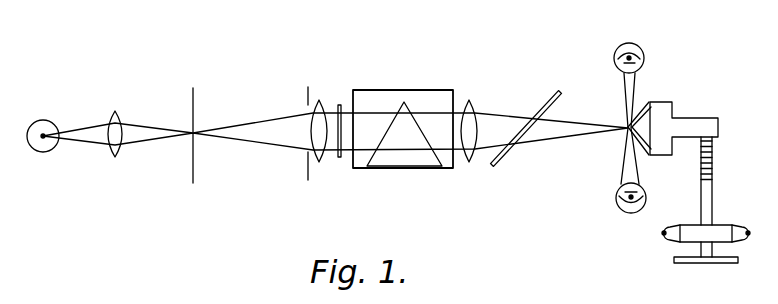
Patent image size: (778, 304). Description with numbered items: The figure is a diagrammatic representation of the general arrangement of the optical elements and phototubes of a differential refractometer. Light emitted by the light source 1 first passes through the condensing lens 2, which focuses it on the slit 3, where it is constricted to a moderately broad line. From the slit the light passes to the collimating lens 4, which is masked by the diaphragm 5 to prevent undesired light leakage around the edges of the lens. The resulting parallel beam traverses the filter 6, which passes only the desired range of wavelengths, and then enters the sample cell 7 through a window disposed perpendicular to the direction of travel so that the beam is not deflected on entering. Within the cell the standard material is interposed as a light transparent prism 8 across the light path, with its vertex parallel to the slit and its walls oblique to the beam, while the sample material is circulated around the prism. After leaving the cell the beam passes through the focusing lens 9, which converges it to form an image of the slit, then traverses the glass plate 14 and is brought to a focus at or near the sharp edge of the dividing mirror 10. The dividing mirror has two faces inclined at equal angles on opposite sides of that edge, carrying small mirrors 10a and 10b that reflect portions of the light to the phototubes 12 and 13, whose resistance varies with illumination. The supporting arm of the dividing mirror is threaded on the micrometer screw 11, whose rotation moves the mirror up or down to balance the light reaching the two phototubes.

The light source 1 is at (38, 121).
The condensing lens 2 is at (116, 112).
The slit 3 is at (194, 96).
The collimating lens 4 is at (321, 162).
The diaphragm 5 is at (308, 178).
The filter 6 is at (339, 104).
The sample cell 7 is at (393, 90).
The prism 8 is at (404, 160).
The focusing lens 9 is at (471, 100).
The dividing mirror 10 is at (673, 130).
The small mirror 10a is at (644, 106).
The small mirror 10b is at (646, 150).
The micrometer screw 11 is at (712, 160).
The phototube 12 is at (641, 49).
The phototube 13 is at (622, 213).
The glass plate 14 is at (553, 96).